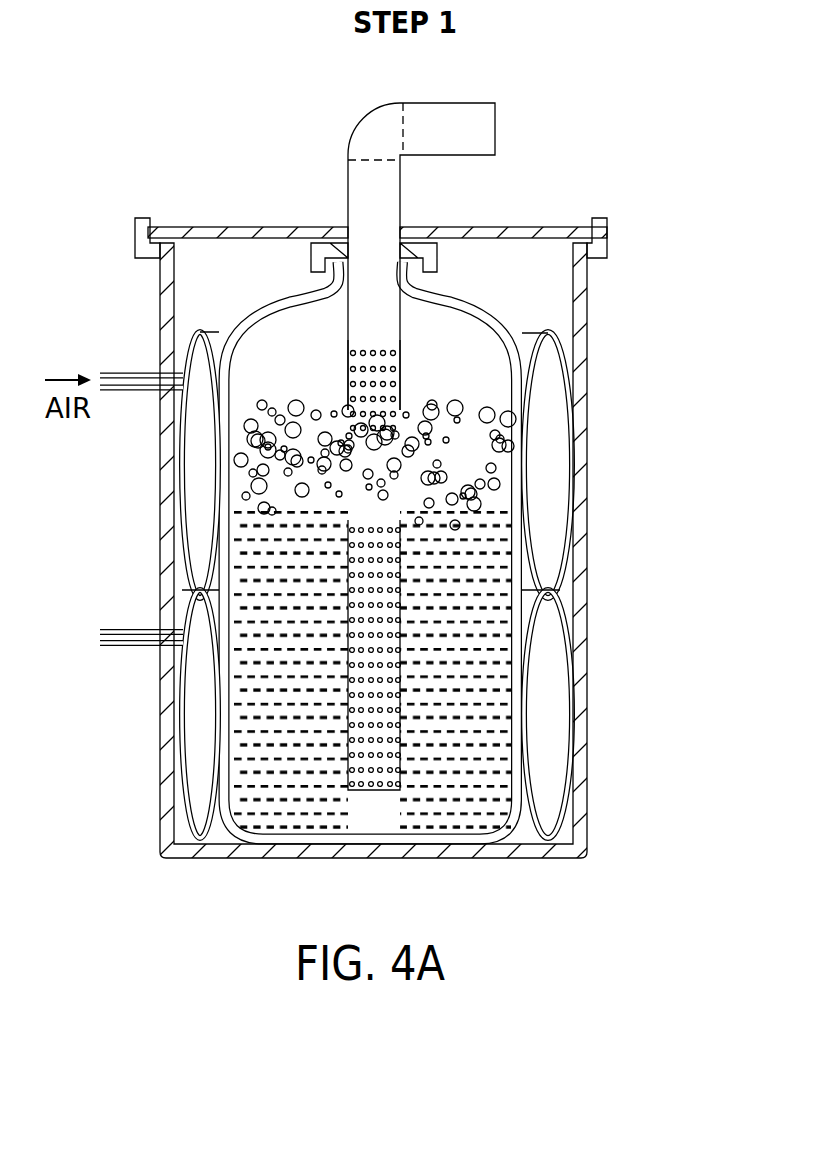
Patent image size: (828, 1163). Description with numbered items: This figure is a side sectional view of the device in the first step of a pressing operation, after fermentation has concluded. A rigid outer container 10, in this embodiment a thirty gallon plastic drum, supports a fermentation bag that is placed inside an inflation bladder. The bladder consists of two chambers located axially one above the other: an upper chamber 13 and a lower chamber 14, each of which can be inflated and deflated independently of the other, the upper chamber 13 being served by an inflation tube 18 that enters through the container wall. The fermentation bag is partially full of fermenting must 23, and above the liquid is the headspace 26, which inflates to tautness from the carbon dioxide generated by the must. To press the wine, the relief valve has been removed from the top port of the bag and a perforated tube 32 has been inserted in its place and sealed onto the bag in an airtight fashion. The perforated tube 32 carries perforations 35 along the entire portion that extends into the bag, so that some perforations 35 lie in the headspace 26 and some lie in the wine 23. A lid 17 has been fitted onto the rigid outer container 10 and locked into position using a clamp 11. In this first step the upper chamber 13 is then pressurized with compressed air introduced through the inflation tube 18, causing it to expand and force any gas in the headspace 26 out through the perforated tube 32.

The rigid outer container 10 is at (587, 460).
The clamp 11 is at (610, 238).
The upper chamber 13 is at (200, 490).
The lower chamber 14 is at (190, 787).
The lid 17 is at (526, 227).
The inflation tube 18 is at (118, 393).
The fermenting must 23 is at (455, 780).
The headspace 26 is at (283, 340).
The perforated tube 32 is at (403, 190).
The perforations 35 is at (400, 620).